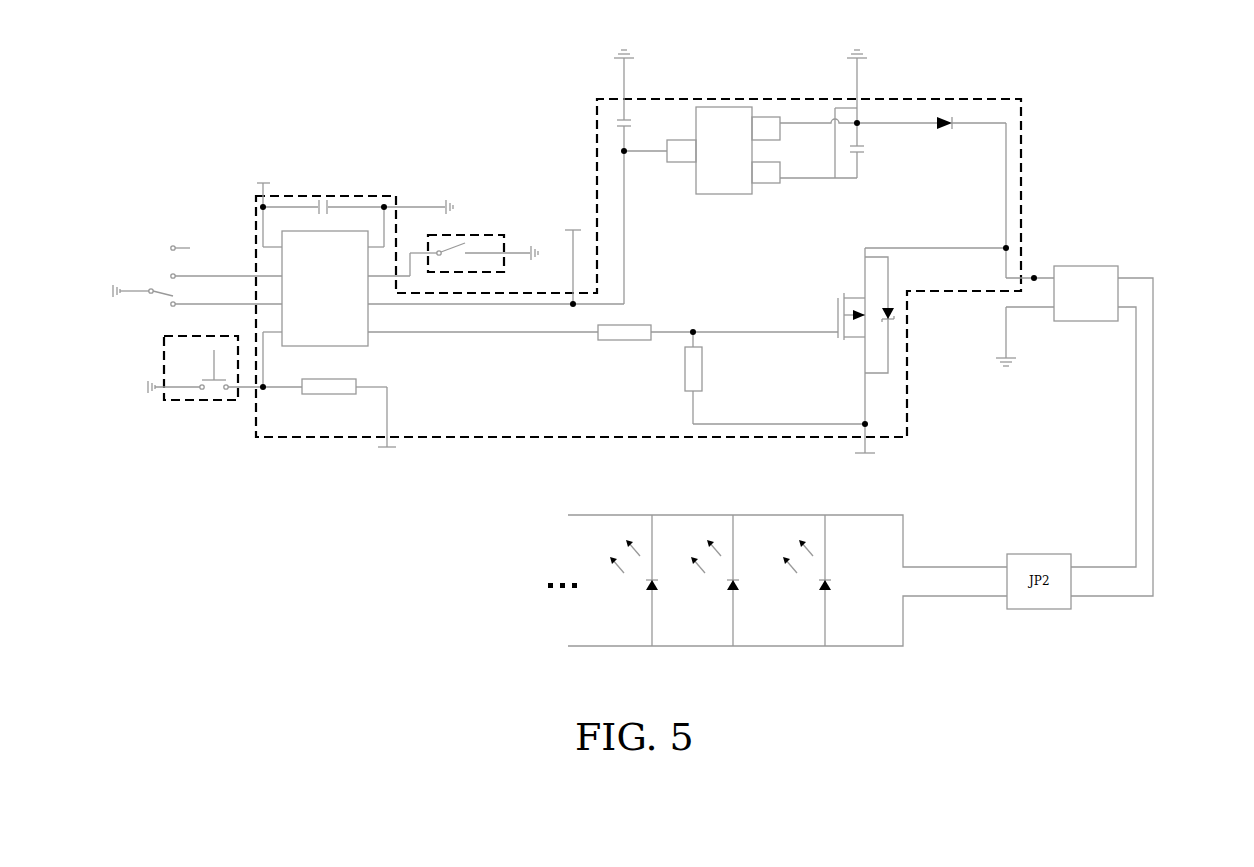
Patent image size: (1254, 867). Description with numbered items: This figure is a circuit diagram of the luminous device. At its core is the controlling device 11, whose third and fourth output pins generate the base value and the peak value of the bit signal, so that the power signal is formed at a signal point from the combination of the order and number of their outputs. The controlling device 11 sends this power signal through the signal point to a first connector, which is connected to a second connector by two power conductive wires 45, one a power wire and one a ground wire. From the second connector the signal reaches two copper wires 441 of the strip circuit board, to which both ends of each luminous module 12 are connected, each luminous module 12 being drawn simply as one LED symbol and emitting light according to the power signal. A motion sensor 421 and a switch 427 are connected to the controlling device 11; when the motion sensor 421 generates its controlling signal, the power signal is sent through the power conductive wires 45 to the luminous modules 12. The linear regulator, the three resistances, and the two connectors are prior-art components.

The controlling device 11 is at (647, 99).
The motion sensor 421 is at (465, 235).
The switch 427 is at (223, 400).
The luminous module 12 is at (647, 588).
The wire 441 is at (903, 517).
The power conductive wire 45 is at (1134, 455).